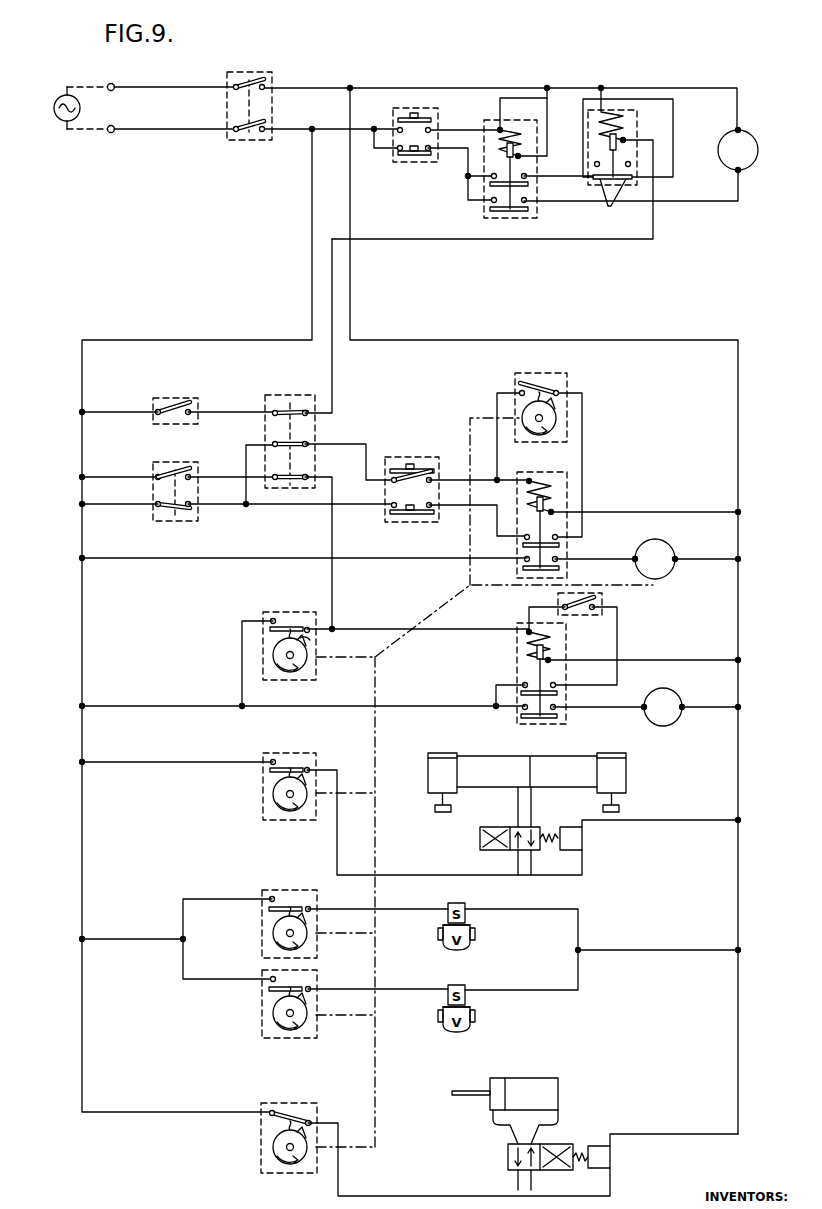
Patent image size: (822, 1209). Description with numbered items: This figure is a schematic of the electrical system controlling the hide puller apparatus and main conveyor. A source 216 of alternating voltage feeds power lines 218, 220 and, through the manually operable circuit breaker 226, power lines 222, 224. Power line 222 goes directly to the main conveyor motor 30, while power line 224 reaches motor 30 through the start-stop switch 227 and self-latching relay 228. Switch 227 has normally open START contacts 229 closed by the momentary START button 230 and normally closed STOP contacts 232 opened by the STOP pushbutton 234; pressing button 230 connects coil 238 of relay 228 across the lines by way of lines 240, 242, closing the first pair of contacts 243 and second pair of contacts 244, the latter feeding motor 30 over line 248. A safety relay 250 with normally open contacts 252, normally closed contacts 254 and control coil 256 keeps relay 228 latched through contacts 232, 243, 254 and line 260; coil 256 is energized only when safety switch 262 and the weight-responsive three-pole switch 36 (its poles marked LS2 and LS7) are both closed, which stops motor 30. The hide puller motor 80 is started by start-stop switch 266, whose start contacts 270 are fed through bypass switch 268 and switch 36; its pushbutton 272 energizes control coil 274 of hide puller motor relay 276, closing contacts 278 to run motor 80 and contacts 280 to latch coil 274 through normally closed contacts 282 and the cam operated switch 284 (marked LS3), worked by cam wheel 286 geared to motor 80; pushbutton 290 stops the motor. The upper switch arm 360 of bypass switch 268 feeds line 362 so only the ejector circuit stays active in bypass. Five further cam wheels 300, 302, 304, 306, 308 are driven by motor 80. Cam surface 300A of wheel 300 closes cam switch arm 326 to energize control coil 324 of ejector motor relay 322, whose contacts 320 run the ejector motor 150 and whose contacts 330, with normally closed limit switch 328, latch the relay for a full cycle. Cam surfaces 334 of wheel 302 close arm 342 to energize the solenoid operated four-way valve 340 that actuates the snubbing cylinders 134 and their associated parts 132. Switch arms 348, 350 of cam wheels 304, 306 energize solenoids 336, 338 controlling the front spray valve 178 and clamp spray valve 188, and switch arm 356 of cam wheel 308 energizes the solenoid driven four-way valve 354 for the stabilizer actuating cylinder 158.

The source of alternating voltage 216 is at (60, 118).
The power line 218 is at (158, 86).
The power line 220 is at (162, 131).
The power line 222 is at (309, 87).
The power line 224 is at (289, 129).
The manually operable circuit breaker 226 is at (252, 141).
The start-stop switch 227 is at (408, 163).
The self-latching relay 228 is at (490, 218).
The normally open START contacts 229 is at (397, 128).
The momentary contact START button 230 is at (423, 117).
The normally closed STOP contacts 232 is at (399, 150).
The momentary contact STOP pushbutton 234 is at (422, 165).
The relay coil 238 is at (520, 145).
The line 240 is at (498, 130).
The line 242 is at (548, 136).
The first pair of normally open contacts 243 is at (528, 175).
The second pair of normally open contacts 244 is at (528, 199).
The line 248 is at (689, 203).
The safety relay 250 is at (613, 108).
The normally open contacts 252 is at (631, 162).
The normally closed contacts 254 is at (613, 203).
The control coil 256 is at (622, 125).
The line 260 is at (674, 118).
The main conveyor motor 30 is at (758, 139).
The normally open safety switch 262 is at (152, 398).
The bypass switch 268 is at (152, 463).
The normally open upper switch arm 360 is at (186, 464).
The weight-responsive three-pole normally open switch 36 is at (275, 395).
The limit switch LS2 is at (270, 410).
The limit switch LS7 is at (270, 442).
The start-stop switch 266 is at (392, 455).
The normally open start contacts 270 is at (392, 480).
The momentary contact pushbutton 272 is at (428, 468).
The normally closed contacts 282 is at (392, 507).
The normally closed pushbutton 290 is at (430, 514).
The cam operated switch 284 is at (568, 379).
The limit switch LS3 is at (540, 378).
The cam wheel 286 is at (560, 418).
The control coil 274 is at (548, 470).
The hide puller motor relay 276 is at (568, 498).
The normally open contacts 278 is at (552, 557).
The contacts 280 is at (559, 536).
The hide puller motor 80 is at (675, 552).
The line 362 is at (375, 630).
The cam switch arm 326 is at (278, 604).
The cam wheel 300 is at (290, 672).
The cam surface 300A is at (312, 641).
The ejector motor relay 322 is at (517, 680).
The normally closed limit switch 328 is at (600, 600).
The control coil 324 is at (545, 649).
The contacts 330 is at (556, 684).
The normally open pair of contacts 320 is at (556, 706).
The ejector motor 150 is at (675, 724).
The arm 342 is at (290, 762).
The cam surfaces 334 is at (312, 769).
The cam wheel 302 is at (287, 812).
The snubbing cylinders 134 is at (428, 780).
The piston foot 132 is at (440, 813).
The solenoid operated four-way valve 340 is at (480, 840).
The switch arm 348 is at (295, 896).
The cam wheel 304 is at (272, 934).
The switch arm 350 is at (312, 987).
The cam wheel 306 is at (272, 1014).
The solenoid 336 is at (466, 905).
The front spray valve 178 is at (474, 932).
The solenoid 338 is at (466, 987).
The clamp spray valve 188 is at (474, 1012).
The switch arm 356 is at (296, 1108).
The cam wheel 308 is at (272, 1148).
The stabilizer actuating cylinder 158 is at (560, 1092).
The solenoid driven four-way valve 354 is at (508, 1157).